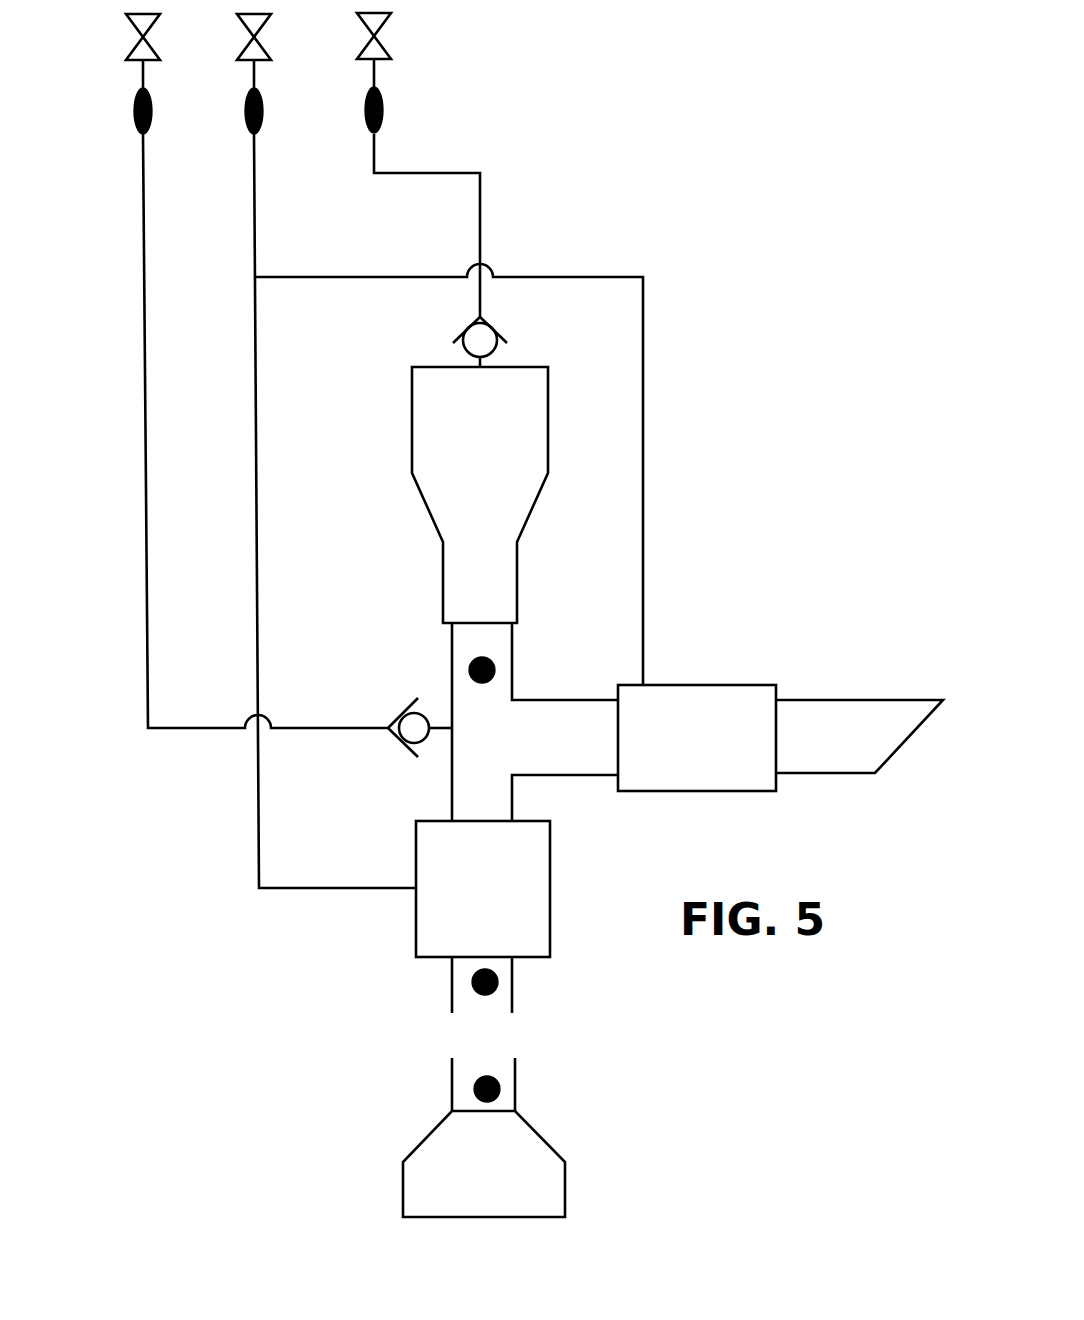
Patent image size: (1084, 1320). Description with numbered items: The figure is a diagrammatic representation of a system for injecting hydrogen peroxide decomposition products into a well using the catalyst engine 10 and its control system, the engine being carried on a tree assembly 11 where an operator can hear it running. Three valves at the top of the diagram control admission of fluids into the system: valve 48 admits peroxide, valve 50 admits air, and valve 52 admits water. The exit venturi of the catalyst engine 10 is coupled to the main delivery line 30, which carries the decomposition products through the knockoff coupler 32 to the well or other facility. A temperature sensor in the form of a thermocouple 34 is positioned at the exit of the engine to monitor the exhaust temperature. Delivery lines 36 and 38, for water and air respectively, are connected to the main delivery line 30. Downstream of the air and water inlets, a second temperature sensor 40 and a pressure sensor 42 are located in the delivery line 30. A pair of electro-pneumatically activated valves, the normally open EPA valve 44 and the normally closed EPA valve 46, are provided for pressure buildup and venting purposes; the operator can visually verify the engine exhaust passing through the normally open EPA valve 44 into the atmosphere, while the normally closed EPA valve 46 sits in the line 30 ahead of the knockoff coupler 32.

The catalyst engine 10 is at (525, 505).
The tree assembly 11 is at (720, 281).
The main delivery line 30 is at (495, 790).
The knockoff coupler 32 is at (500, 1186).
The thermocouple 34 is at (495, 665).
The delivery line 36 is at (149, 483).
The delivery line 38 is at (261, 483).
The second temperature sensor 40 is at (498, 982).
The pressure sensor 42 is at (500, 1083).
The normally open EPA valve 44 is at (738, 685).
The normally closed EPA valve 46 is at (423, 929).
The valve 48 is at (382, 55).
The valve 50 is at (264, 57).
The valve 52 is at (153, 57).